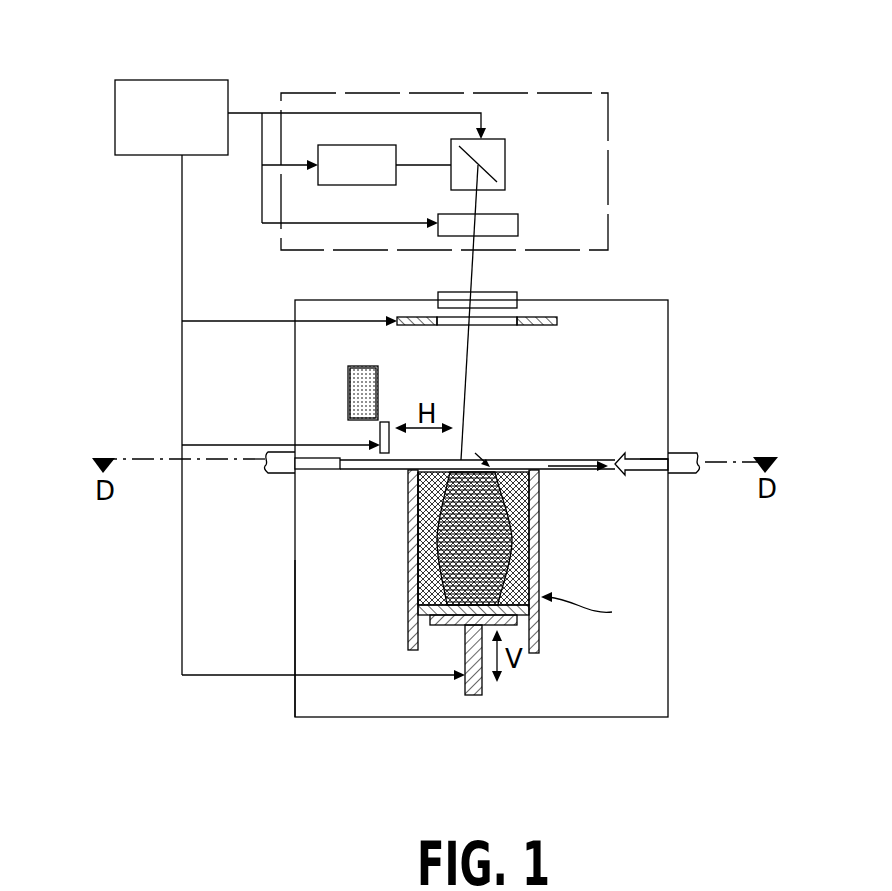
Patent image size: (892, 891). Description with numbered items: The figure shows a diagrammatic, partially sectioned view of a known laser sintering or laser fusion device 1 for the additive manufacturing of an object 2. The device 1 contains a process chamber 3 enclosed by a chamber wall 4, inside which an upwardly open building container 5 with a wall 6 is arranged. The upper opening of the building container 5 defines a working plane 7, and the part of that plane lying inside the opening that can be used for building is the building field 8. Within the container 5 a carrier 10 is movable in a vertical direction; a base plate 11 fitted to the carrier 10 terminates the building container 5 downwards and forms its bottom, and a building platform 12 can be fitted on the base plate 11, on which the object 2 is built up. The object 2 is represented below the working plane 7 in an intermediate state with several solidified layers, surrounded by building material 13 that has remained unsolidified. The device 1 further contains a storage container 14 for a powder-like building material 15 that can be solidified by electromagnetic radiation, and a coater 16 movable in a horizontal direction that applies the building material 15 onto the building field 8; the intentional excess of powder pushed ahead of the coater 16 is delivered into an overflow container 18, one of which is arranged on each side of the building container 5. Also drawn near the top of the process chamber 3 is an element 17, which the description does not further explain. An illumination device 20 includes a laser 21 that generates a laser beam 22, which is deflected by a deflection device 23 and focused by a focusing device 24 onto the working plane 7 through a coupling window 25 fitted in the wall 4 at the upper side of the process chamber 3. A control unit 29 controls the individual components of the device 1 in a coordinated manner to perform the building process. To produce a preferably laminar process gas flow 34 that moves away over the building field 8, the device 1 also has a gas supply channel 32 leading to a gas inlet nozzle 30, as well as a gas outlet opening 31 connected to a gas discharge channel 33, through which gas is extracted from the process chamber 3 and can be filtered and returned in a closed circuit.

The laser sintering or laser fusion device 1 is at (638, 102).
The object 2 is at (493, 510).
The process chamber 3 is at (625, 325).
The chamber wall 4 is at (295, 612).
The building container 5 is at (593, 610).
The wall 6 is at (522, 555).
The working plane 7 is at (578, 472).
The building field 8 is at (517, 468).
The carrier 10 is at (458, 626).
The base plate 11 is at (430, 622).
The building platform 12 is at (418, 608).
The building material 13 is at (410, 500).
The storage container 14 is at (362, 370).
The powder-like building material 15 is at (367, 395).
The coater 16 is at (379, 438).
The protective shield 17 is at (417, 320).
The overflow container 18 is at (408, 560).
The illumination device 20 is at (610, 200).
The laser 21 is at (385, 170).
The laser beam 22 is at (420, 163).
The deflection device 23 is at (492, 155).
The focusing device 24 is at (500, 223).
The coupling window 25 is at (500, 300).
The control unit 29 is at (146, 138).
The gas inlet nozzle 30 is at (312, 470).
The gas outlet opening 31 is at (648, 460).
The gas supply channel 32 is at (280, 472).
The gas discharge channel 33 is at (683, 460).
The process gas flow 34 is at (568, 463).